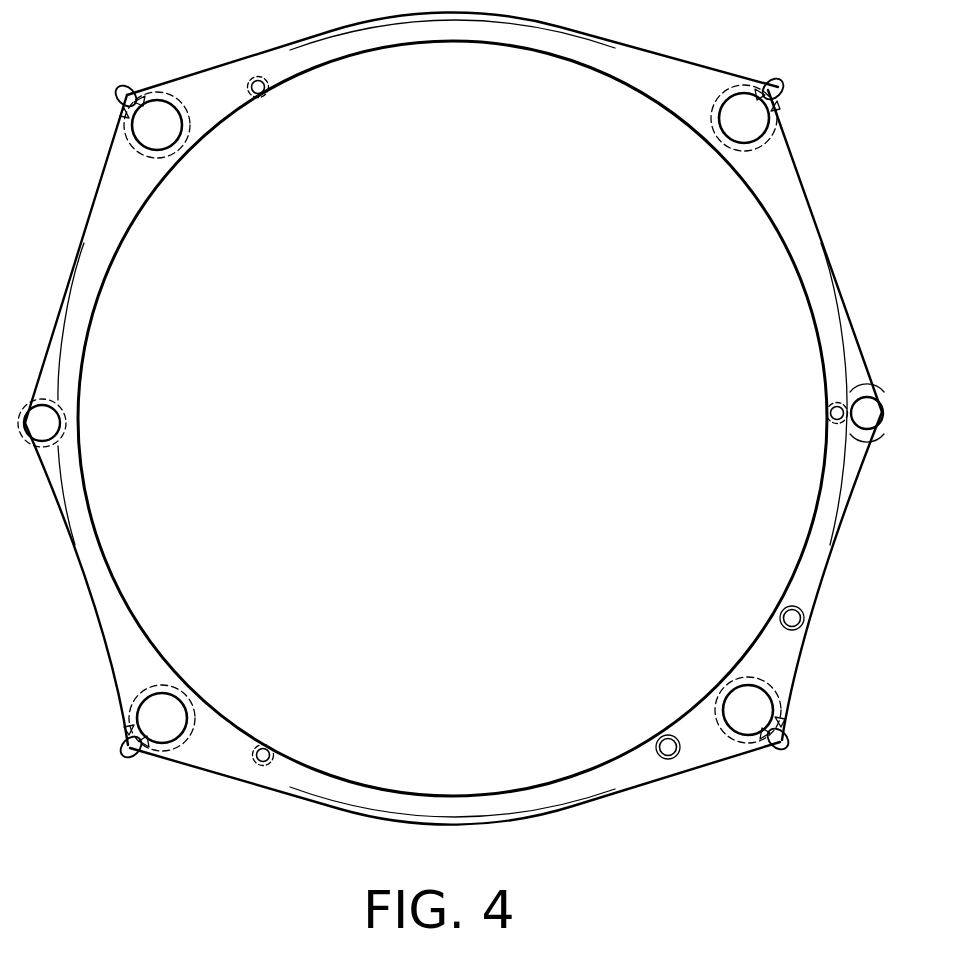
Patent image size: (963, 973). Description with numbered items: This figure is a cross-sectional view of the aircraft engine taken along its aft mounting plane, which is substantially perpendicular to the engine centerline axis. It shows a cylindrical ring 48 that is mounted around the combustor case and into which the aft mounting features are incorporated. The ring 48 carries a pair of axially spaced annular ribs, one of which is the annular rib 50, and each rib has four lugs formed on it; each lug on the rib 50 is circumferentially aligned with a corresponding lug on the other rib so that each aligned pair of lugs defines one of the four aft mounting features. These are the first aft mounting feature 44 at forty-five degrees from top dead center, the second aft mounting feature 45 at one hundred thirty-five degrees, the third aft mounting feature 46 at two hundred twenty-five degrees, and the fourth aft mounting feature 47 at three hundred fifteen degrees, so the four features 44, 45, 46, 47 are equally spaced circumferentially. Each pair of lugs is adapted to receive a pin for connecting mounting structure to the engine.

The first aft mounting feature 44 is at (757, 125).
The second aft mounting feature 45 is at (762, 714).
The third aft mounting feature 46 is at (168, 732).
The fourth aft mounting feature 47 is at (163, 113).
The cylindrical ring 48 is at (588, 778).
The annular rib 50 is at (690, 68).